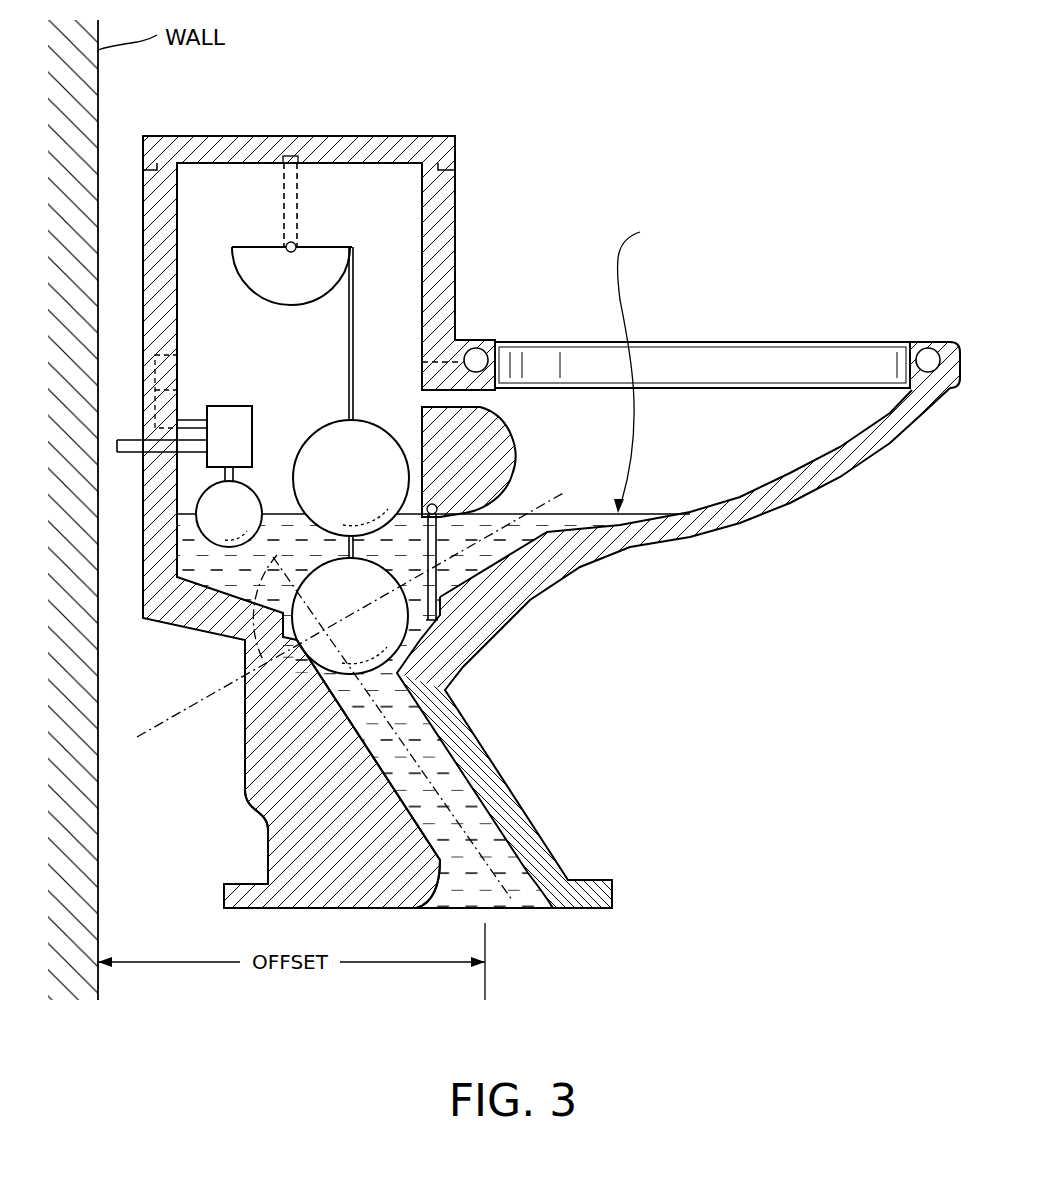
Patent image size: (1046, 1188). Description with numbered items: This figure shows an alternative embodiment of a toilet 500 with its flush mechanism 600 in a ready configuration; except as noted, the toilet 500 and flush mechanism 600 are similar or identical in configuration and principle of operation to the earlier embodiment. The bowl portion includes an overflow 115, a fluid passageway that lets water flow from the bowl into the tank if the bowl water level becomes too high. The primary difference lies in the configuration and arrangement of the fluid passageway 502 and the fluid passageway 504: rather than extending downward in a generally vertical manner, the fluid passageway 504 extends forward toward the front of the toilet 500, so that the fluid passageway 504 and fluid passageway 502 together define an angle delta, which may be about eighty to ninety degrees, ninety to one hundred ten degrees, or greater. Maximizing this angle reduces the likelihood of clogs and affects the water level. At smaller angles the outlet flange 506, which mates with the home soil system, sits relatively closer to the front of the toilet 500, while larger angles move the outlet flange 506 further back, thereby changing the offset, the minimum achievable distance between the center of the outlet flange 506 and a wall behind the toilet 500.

The toilet 500 is at (538, 510).
The flush mechanism 600 is at (380, 322).
The overflow 115 is at (468, 398).
The fluid passageway 502 is at (470, 557).
The fluid passageway 504 is at (413, 786).
The outlet flange 506 is at (580, 908).